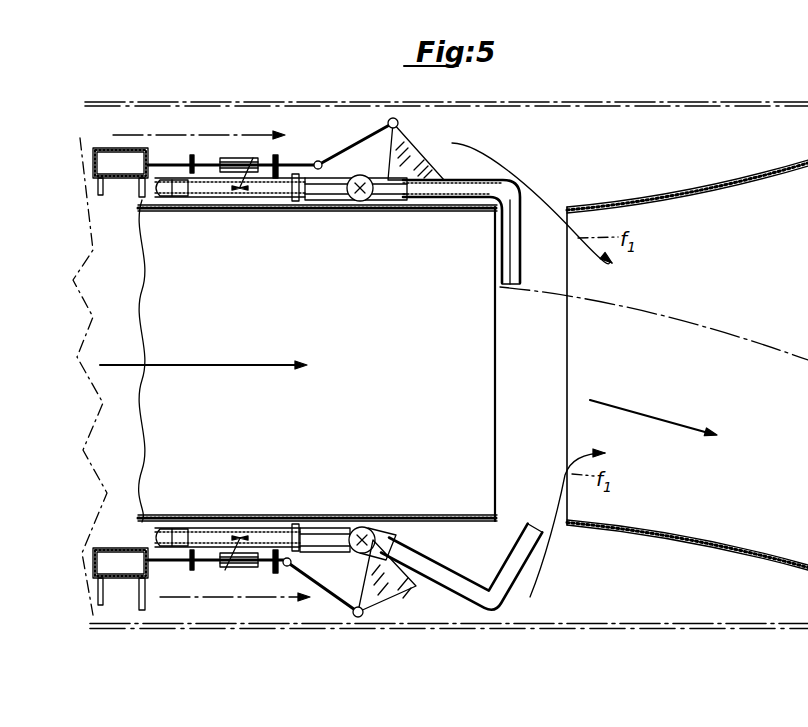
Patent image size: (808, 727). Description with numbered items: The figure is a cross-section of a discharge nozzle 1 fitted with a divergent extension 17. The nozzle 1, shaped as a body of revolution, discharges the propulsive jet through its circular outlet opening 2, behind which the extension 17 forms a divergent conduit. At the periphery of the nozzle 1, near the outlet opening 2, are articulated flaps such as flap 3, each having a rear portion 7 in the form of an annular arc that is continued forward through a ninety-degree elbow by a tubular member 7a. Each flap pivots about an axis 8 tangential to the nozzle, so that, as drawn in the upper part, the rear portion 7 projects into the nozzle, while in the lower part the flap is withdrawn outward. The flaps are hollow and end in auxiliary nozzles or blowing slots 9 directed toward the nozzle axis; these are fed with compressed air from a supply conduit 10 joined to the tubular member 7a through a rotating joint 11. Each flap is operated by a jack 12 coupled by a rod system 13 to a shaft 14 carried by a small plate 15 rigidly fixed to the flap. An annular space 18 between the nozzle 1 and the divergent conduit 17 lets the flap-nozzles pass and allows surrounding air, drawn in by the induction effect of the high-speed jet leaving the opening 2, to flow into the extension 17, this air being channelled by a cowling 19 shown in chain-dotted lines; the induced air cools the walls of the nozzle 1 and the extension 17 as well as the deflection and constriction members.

The nozzle 1 is at (455, 514).
The outlet opening 2 is at (496, 418).
The articulated flap 3 is at (503, 180).
The rear portion 7 is at (520, 272).
The tubular member 7a is at (425, 190).
The axis 8 is at (361, 186).
The auxiliary nozzle 9 is at (503, 286).
The supply conduit 10 is at (173, 192).
The rotating joint 11 is at (360, 200).
The jack 12 is at (112, 152).
The rod system 13 is at (294, 162).
The shaft 14 is at (399, 122).
The small plate 15 is at (411, 164).
The divergent extension 17 is at (709, 190).
The annular space 18 is at (531, 362).
The cowling 19 is at (671, 627).